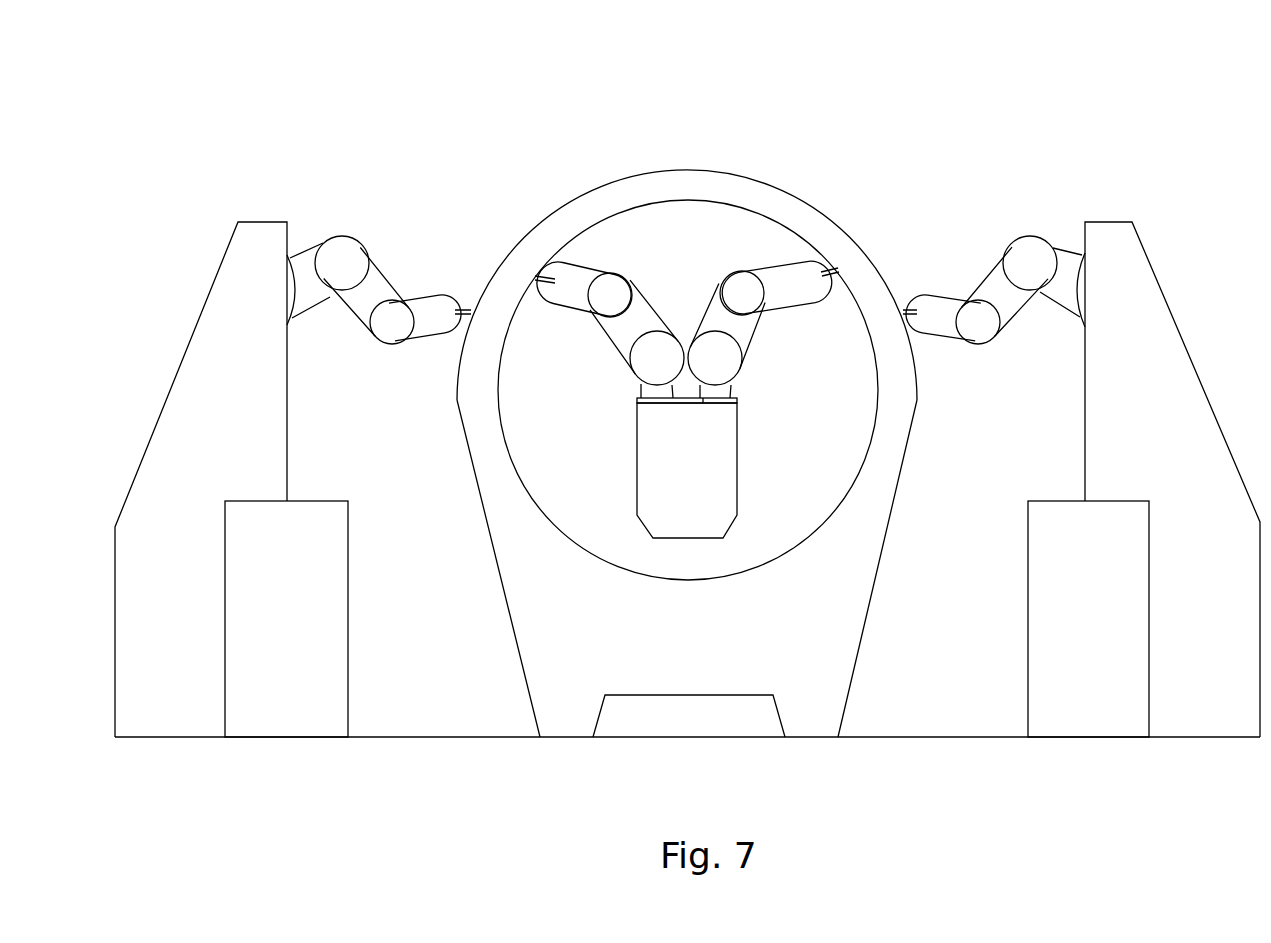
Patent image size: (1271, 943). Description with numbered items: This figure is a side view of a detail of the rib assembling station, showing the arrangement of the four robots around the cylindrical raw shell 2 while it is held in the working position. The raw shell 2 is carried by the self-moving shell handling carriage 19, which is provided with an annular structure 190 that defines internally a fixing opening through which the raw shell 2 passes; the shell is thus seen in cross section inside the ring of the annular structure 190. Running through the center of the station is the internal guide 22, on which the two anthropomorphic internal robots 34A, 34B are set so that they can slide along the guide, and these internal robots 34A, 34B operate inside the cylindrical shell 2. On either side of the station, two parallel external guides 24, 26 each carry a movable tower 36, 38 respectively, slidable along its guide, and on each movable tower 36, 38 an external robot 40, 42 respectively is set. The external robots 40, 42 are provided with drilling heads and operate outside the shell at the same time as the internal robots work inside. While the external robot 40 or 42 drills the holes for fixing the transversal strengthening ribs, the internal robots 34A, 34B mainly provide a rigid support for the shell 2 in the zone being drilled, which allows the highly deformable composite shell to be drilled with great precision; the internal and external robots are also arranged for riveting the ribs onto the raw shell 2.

The raw shell 2 is at (512, 452).
The shell handling carriage 19 is at (510, 622).
The internal guide 22 is at (652, 448).
The external guide 24 is at (306, 500).
The external guide 26 is at (1052, 597).
The internal robot 34A is at (608, 283).
The internal robot 34B is at (788, 293).
The movable tower 36 is at (220, 302).
The movable tower 38 is at (1140, 285).
The external robot 40 is at (336, 247).
The external robot 42 is at (1026, 247).
The annular structure 190 is at (628, 167).